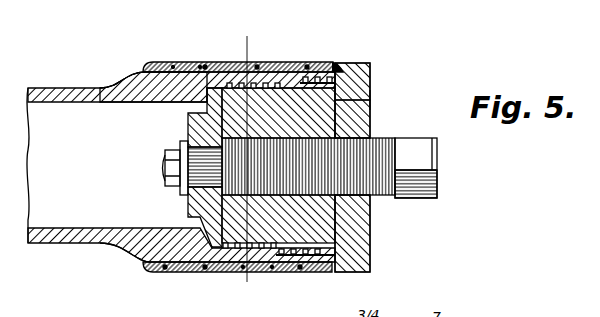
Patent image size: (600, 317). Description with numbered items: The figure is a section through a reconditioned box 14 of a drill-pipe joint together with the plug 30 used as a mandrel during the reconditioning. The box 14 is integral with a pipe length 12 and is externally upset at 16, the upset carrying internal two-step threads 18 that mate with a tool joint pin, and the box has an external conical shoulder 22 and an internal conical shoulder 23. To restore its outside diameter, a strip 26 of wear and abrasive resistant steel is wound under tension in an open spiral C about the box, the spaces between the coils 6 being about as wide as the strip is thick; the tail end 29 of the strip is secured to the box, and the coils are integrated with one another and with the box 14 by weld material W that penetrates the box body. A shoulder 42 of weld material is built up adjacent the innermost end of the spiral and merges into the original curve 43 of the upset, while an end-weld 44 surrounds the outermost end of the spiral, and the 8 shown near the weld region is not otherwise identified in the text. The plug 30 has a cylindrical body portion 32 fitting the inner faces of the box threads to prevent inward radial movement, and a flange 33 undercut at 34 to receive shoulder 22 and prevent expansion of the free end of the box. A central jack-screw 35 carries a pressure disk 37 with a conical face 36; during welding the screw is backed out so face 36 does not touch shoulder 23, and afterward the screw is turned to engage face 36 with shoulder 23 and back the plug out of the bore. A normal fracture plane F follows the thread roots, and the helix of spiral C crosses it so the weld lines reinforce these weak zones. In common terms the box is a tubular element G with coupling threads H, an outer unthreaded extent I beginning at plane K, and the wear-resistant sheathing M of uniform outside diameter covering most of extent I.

The pipe length 12 is at (44, 88).
The box 14 is at (111, 255).
The external upset 16 is at (134, 74).
The original curve of the upset 43 is at (148, 82).
The shoulder of weld material 42 is at (150, 63).
The tail end of strip 29 is at (167, 268).
The strip of wear and abrasive resistant material 26 is at (232, 56).
The coil 6 is at (255, 60).
The grounding teeth 8 is at (300, 94).
The external conical shoulder 22 is at (341, 70).
The end-weld 44 is at (338, 63).
The flange 33 is at (372, 68).
The cylindrical body portion 32 is at (336, 122).
The plug 30 is at (375, 216).
The jack-screw 35 is at (373, 158).
The pressure disk 37 is at (200, 200).
The conical face 36 is at (192, 115).
The internal conical shoulder 23 is at (205, 104).
The internal two-step threads 18 is at (313, 243).
The undercut 34 is at (335, 252).
The spiral sheath C is at (176, 55).
The weld material W is at (203, 56).
The fracture plane F is at (247, 160).
The outer unthreaded longitudinal extent I is at (333, 62).
The plane K- K is at (337, 63).
The coupling threads H is at (371, 100).
The sheathing of wear resistant metal M is at (247, 277).
The tubular element G is at (144, 251).